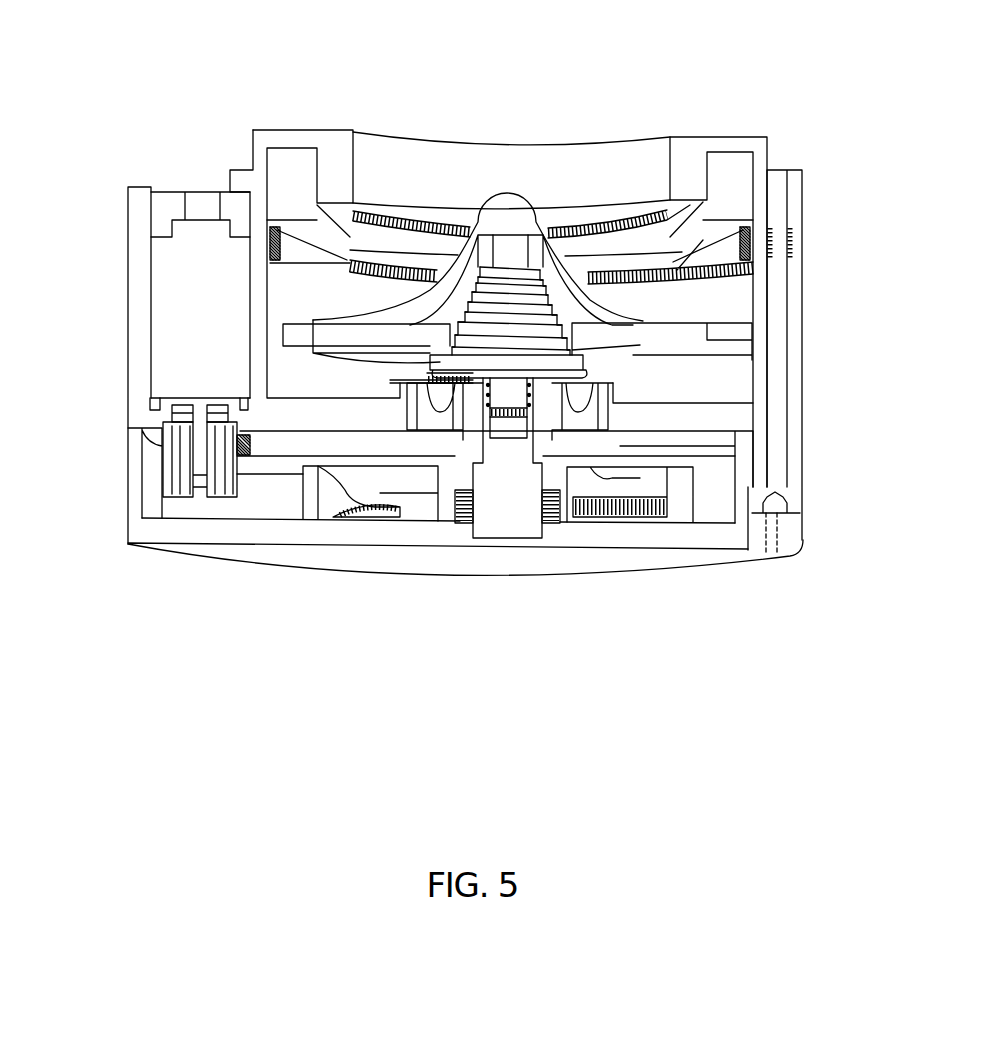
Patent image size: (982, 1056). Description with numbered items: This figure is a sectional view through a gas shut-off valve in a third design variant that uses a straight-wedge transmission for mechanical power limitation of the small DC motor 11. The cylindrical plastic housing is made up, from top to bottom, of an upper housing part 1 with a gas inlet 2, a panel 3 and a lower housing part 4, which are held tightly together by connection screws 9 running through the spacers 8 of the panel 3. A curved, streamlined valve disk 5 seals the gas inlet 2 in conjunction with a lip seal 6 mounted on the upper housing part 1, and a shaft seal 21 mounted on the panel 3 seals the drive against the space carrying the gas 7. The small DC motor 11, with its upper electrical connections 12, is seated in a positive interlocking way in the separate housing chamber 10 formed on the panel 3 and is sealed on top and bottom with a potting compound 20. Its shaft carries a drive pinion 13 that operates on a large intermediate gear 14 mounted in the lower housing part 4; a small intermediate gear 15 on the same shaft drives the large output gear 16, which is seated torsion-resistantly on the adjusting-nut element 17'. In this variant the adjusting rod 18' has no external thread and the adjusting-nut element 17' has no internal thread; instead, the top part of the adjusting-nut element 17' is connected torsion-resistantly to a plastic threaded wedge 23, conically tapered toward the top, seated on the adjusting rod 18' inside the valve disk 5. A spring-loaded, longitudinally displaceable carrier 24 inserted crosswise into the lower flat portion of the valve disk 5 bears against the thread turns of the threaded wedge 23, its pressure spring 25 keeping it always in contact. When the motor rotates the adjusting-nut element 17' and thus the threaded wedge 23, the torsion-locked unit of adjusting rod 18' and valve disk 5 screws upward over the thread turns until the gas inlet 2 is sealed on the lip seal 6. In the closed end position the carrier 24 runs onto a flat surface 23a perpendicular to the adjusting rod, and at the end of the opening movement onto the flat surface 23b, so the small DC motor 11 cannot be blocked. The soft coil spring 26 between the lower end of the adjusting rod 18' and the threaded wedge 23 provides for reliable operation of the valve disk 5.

The upper housing part 1 is at (328, 128).
The gas inlet 2 is at (446, 130).
The panel 3 is at (697, 423).
The lower housing part 4 is at (665, 538).
The valve disk 5 is at (510, 243).
The lip seal 6 is at (403, 235).
The space carrying the gas 7 is at (313, 306).
The spacers 8 is at (802, 378).
The connection screws 9 is at (776, 492).
The separate housing chamber 10 is at (143, 198).
The small DC motor 11 is at (175, 300).
The electrical connections 12 is at (200, 203).
The drive pinion 13 is at (172, 470).
The large intermediate gear 14 is at (273, 450).
The small intermediate gear 15 is at (308, 466).
The output gear 16 is at (347, 492).
The adjusting-nut element 17' is at (507, 521).
The adjusting rod 18' is at (538, 521).
The potting compound 20 is at (173, 205).
The shaft seal 21 is at (448, 413).
The threaded wedge 23 is at (525, 312).
The flat surface 23a is at (530, 266).
The flat surface 23b is at (565, 362).
The carrier 24 is at (297, 333).
The pressure spring 25 is at (393, 345).
The soft coil spring 26 is at (523, 393).